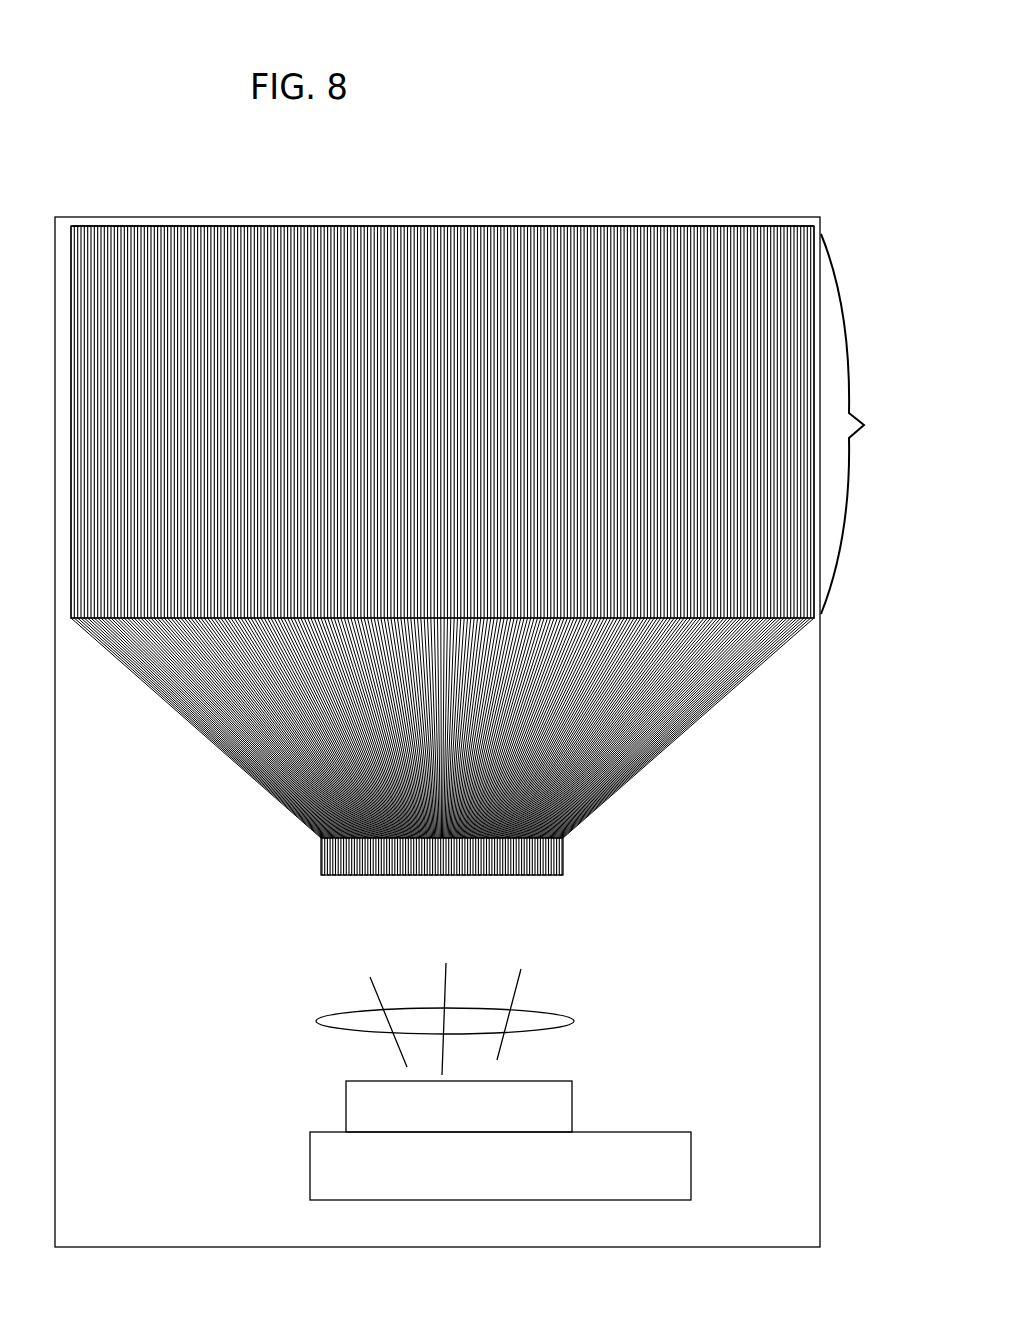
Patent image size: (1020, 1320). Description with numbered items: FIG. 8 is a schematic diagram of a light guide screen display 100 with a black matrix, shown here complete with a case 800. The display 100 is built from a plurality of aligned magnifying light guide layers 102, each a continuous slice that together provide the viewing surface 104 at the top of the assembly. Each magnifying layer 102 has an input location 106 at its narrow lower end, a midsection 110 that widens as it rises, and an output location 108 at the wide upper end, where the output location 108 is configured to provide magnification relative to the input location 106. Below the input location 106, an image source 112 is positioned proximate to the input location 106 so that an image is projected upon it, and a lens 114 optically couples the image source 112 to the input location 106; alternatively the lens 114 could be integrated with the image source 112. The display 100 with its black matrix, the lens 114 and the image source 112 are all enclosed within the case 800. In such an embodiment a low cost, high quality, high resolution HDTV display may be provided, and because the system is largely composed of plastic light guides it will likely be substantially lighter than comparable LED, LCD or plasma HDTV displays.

The light guide screen display 100 is at (809, 214).
The magnifying light guide layer 102 is at (65, 215).
The viewing surface 104 is at (538, 259).
The input location 106 is at (557, 876).
The output location 108 is at (862, 424).
The midsection 110 is at (806, 622).
The image source 112 is at (532, 1098).
The lens 114 is at (548, 1018).
The case 800 is at (808, 931).